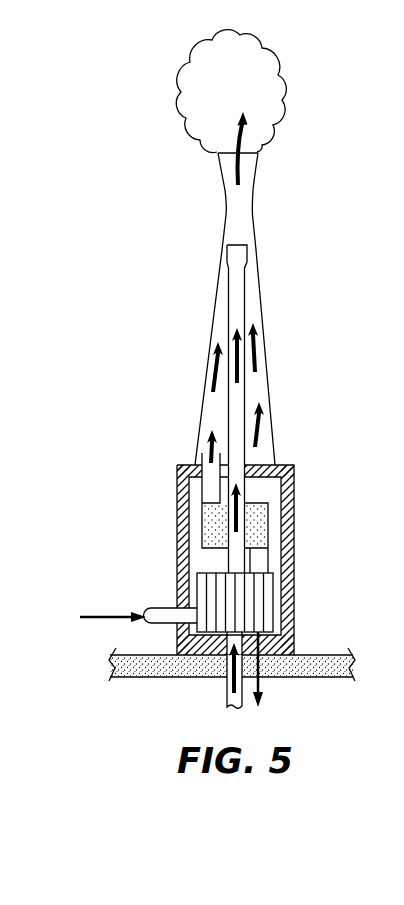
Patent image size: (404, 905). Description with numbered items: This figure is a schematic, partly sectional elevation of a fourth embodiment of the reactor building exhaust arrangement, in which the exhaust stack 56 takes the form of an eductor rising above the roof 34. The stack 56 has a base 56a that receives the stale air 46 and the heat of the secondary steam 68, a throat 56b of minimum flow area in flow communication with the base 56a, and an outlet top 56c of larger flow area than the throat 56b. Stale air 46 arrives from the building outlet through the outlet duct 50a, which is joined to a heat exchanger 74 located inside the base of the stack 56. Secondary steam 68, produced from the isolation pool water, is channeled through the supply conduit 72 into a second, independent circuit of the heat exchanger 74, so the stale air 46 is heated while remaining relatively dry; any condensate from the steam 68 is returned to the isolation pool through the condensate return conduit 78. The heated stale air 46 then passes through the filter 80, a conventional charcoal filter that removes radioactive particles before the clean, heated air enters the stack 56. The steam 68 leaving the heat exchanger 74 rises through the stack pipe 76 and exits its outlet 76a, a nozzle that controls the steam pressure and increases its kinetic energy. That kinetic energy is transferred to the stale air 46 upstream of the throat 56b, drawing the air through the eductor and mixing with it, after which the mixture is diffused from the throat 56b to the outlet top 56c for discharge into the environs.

The roof 34 is at (330, 655).
The stale air 46 is at (214, 361).
The outlet duct 50a is at (167, 607).
The exhaust stack 56 is at (272, 307).
The base 56a is at (269, 440).
The throat 56b is at (253, 214).
The outlet top 56c is at (259, 165).
The secondary steam 68 is at (232, 335).
The supply conduit 72 is at (226, 705).
The heat exchanger 74 is at (262, 609).
The stack pipe 76 is at (228, 406).
The outlet 76a is at (247, 289).
The condensate return conduit 78 is at (263, 694).
The filter 80 is at (257, 522).